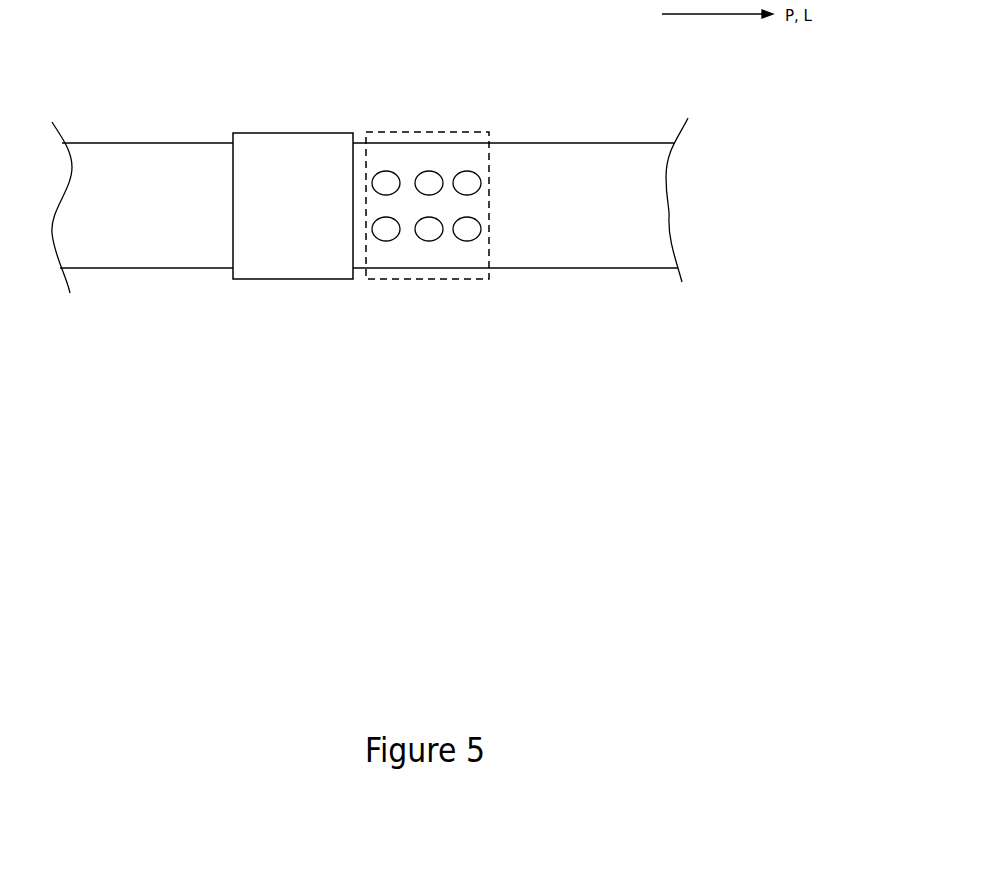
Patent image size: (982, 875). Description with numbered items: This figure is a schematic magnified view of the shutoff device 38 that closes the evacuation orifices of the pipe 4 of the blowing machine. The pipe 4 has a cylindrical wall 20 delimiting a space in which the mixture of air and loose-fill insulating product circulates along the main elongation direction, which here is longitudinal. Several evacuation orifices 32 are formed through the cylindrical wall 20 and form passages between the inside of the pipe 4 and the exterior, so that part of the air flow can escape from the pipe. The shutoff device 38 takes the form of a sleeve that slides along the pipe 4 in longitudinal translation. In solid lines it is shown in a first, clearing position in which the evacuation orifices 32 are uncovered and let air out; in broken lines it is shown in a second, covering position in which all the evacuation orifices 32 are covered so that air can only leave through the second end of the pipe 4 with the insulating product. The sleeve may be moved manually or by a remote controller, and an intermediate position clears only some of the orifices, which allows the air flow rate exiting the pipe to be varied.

The pipe 4 is at (370, 254).
The cylindrical wall 20 is at (549, 143).
The evacuation orifice 32 is at (429, 171).
The shutoff device 38 is at (280, 279).